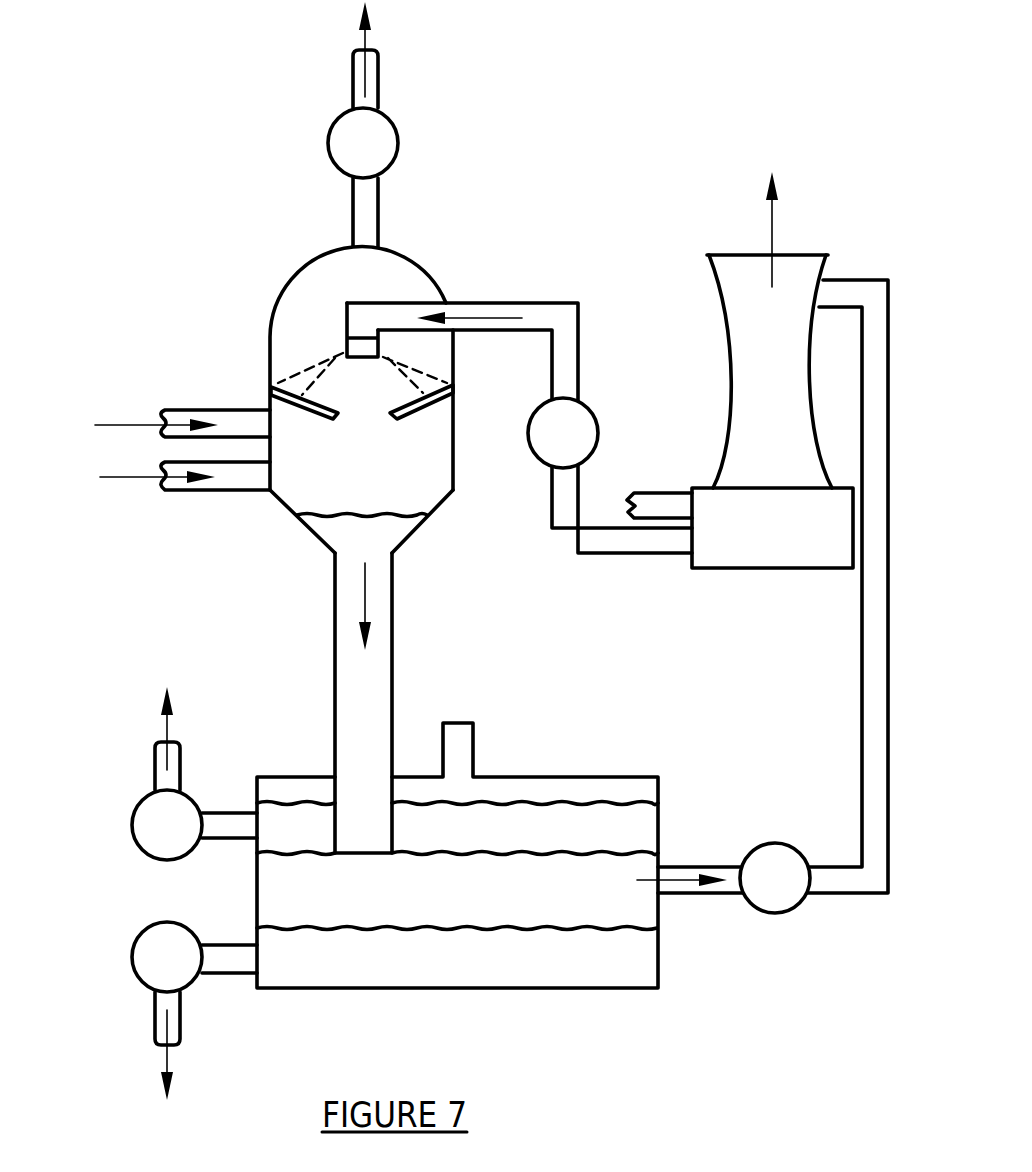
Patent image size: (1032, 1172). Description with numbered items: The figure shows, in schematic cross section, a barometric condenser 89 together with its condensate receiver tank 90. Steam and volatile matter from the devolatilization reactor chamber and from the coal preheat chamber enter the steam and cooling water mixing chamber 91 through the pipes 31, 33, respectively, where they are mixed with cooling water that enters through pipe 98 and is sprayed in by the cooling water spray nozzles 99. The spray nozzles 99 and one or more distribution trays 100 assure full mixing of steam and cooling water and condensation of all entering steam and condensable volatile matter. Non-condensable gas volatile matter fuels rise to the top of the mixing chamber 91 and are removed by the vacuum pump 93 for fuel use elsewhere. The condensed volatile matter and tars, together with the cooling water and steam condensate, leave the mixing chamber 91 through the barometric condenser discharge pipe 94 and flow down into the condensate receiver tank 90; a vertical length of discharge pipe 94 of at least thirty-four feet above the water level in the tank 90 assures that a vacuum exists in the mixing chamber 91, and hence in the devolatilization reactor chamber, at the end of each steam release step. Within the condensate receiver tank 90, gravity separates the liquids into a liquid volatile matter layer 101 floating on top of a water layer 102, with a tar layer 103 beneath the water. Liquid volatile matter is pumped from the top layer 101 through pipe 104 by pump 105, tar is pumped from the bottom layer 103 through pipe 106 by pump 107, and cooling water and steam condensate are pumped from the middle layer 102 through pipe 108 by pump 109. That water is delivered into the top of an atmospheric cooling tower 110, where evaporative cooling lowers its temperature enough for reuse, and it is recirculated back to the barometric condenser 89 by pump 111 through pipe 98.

The pipe 31 is at (205, 487).
The pipe 33 is at (210, 408).
The barometric condenser 89 is at (443, 505).
The condensate receiver tank 90 is at (632, 988).
The steam and cooling water mixing chamber 91 is at (303, 343).
The vacuum pump 93 is at (387, 143).
The barometric condenser discharge pipe 94 is at (365, 660).
The pipe 98 is at (468, 308).
The cooling water spray nozzles 99 is at (357, 347).
The distribution trays 100 is at (425, 410).
The liquid volatile matter layer 101 is at (538, 825).
The water layer 102 is at (578, 890).
The tar layer 103 is at (455, 965).
The pipe 104 is at (220, 813).
The pump 105 is at (142, 823).
The pipe 106 is at (232, 975).
The pump 107 is at (138, 973).
The pipe 108 is at (718, 893).
The pump 109 is at (788, 895).
The atmospheric cooling tower 110 is at (792, 292).
The pump 111 is at (580, 428).